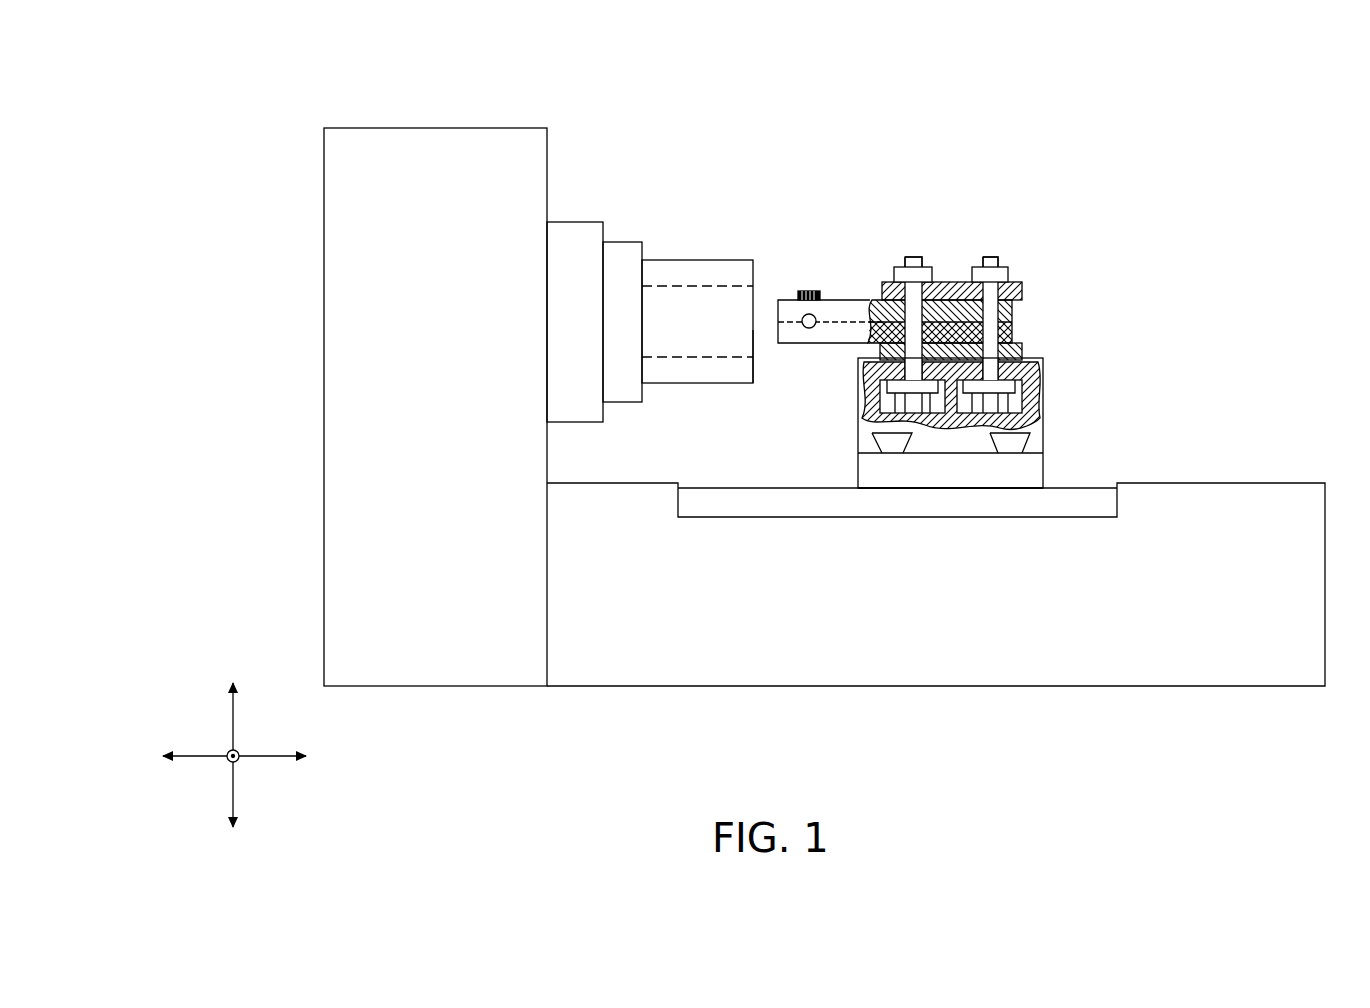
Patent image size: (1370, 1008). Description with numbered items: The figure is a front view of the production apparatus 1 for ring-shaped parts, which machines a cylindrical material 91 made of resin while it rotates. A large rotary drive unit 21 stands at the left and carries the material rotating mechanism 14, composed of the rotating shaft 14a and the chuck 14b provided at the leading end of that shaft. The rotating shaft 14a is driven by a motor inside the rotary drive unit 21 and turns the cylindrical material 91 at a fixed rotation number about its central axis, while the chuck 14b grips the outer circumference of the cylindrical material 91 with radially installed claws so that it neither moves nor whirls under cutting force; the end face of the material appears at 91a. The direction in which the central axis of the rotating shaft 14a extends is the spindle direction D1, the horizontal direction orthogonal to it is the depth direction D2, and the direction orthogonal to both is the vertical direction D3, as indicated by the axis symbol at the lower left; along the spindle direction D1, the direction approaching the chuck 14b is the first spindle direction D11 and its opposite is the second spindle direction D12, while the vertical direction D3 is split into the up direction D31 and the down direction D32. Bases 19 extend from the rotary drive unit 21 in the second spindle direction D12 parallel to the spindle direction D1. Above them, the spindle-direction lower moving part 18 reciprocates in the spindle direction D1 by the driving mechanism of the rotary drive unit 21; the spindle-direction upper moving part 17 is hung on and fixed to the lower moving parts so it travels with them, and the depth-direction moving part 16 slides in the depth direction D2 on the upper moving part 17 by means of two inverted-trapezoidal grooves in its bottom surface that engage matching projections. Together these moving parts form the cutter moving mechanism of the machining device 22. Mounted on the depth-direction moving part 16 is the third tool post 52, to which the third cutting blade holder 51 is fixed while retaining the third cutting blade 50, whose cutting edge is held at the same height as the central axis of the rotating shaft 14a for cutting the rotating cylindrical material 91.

The production apparatus for ring-shaped parts 1 is at (300, 104).
The material rotating mechanism 14 is at (668, 114).
The rotating shaft 14a is at (583, 222).
The chuck 14b is at (635, 242).
The cylindrical material 91 is at (697, 305).
The end face of workpiece 91a is at (753, 368).
The third cutting blade 50 is at (803, 314).
The third cutting blade holder 51 is at (858, 312).
The third tool post 52 is at (957, 282).
The machining device 22 is at (1036, 220).
The depth-direction moving part 16 is at (1043, 425).
The spindle-direction upper moving part 17 is at (1037, 466).
The spindle-direction lower moving part 18 is at (768, 500).
The base 19 is at (632, 495).
The rotary drive unit 21 is at (350, 540).
The spindle direction D1 is at (267, 759).
The depth direction D2 is at (230, 762).
The vertical direction D3 is at (236, 714).
The first spindle direction D11 is at (131, 755).
The second spindle direction D12 is at (337, 755).
The up direction D31 is at (236, 664).
The down direction D32 is at (236, 849).